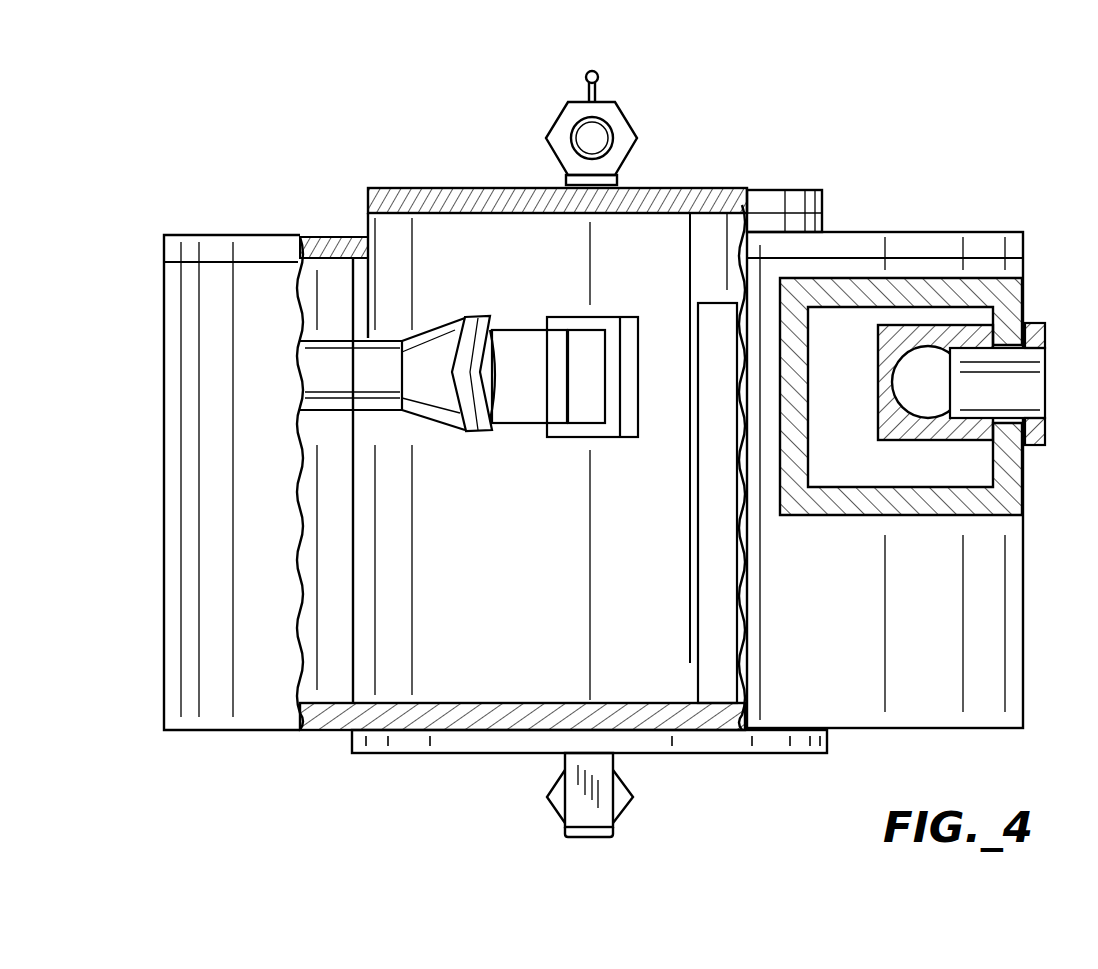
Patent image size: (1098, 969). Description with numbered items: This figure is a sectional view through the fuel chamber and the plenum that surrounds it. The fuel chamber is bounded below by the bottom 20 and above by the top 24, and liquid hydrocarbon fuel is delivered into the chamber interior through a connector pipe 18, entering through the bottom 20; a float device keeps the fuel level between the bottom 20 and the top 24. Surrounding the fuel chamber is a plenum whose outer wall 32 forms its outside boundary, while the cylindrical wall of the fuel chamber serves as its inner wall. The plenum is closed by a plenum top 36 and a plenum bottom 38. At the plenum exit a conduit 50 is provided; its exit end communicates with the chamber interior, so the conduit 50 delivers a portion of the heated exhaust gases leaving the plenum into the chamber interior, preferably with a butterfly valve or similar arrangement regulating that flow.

The connector pipe 18 is at (572, 810).
The bottom of the fuel chamber 20 is at (690, 753).
The top of the fuel chamber 24 is at (750, 188).
The outer wall 32 is at (1015, 638).
The plenum top 36 is at (957, 233).
The plenum bottom 38 is at (308, 731).
The conduit 50 is at (615, 134).